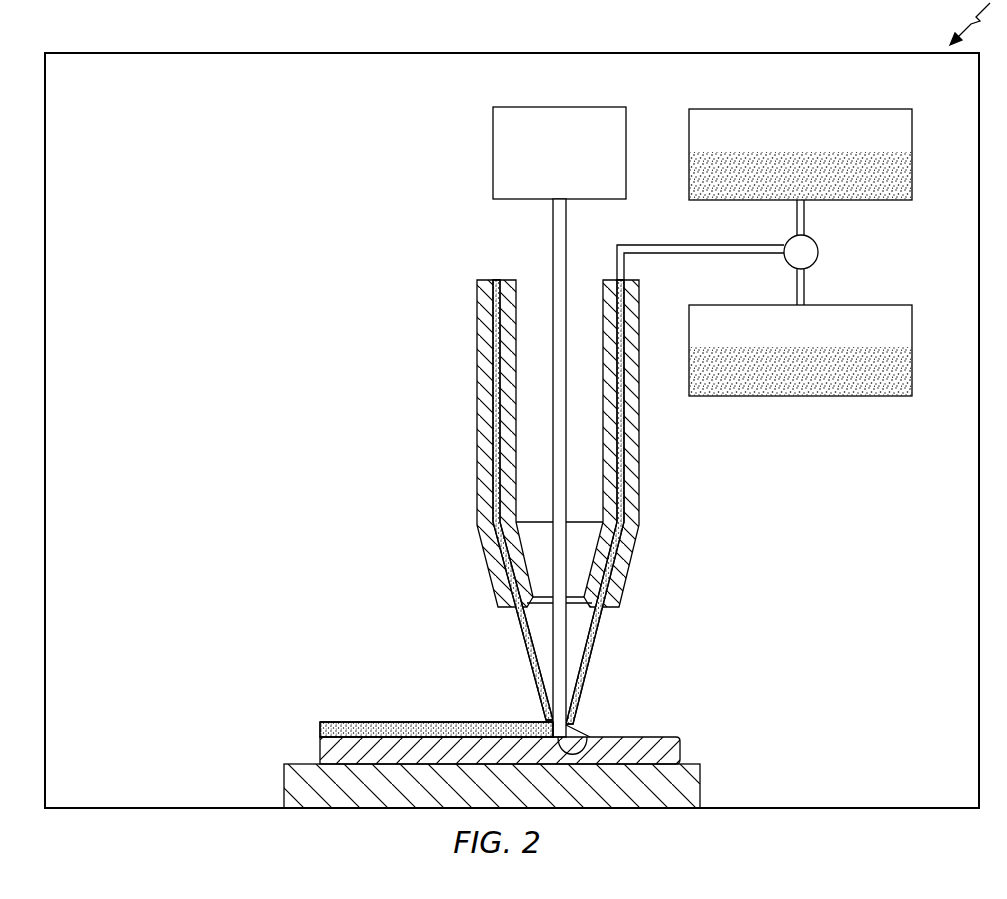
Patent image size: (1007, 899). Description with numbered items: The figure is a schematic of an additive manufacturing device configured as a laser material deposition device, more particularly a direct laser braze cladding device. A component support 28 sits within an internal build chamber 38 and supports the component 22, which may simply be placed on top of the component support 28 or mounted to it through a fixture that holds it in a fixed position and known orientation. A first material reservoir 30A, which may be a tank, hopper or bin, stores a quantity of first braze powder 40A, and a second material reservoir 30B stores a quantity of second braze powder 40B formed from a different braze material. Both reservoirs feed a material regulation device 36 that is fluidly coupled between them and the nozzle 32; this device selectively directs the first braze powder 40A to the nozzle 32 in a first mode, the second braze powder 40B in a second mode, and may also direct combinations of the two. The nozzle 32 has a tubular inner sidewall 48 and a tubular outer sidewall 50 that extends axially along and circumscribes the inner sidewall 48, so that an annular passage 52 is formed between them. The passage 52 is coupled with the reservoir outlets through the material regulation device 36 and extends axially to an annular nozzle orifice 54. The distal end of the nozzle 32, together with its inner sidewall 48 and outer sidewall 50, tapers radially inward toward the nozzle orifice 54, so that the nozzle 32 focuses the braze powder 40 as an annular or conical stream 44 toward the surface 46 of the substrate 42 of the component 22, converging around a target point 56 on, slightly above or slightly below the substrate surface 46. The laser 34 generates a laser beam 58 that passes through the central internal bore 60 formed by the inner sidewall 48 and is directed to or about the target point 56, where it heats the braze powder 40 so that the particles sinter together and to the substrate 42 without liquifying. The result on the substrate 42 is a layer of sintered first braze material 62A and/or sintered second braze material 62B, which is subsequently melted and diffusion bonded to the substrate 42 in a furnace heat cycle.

The component 22 is at (499, 722).
The component support 28 is at (701, 790).
The first material reservoir 30A is at (913, 118).
The second material reservoir 30B is at (913, 312).
The nozzle 32 is at (548, 468).
The laser 34 is at (493, 155).
The material regulation device 36 is at (820, 250).
The internal build chamber 38 is at (293, 530).
The braze powder 40 is at (530, 676).
The first braze powder 40A is at (903, 173).
The second braze powder 40B is at (903, 371).
The substrate 42 is at (683, 752).
The stream 44 is at (598, 650).
The substrate surface 46 is at (348, 722).
The tubular inner sidewall 48 is at (603, 478).
The tubular outer sidewall 50 is at (641, 472).
The passage 52 is at (492, 326).
The nozzle orifice 54 is at (514, 606).
The target point 56 is at (586, 742).
The laser beam 58 is at (551, 648).
The internal bore 60 is at (573, 382).
The sintered first braze material 62A is at (383, 722).
The sintered second braze material 62B is at (436, 729).